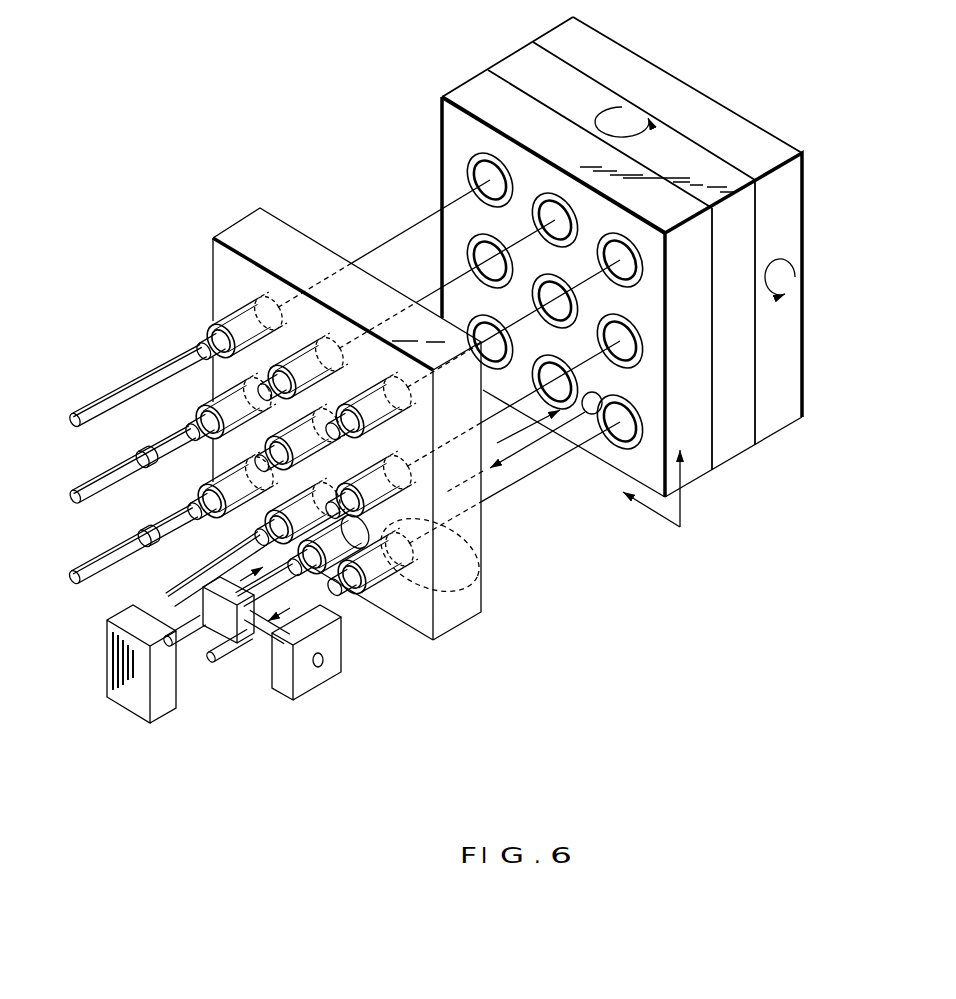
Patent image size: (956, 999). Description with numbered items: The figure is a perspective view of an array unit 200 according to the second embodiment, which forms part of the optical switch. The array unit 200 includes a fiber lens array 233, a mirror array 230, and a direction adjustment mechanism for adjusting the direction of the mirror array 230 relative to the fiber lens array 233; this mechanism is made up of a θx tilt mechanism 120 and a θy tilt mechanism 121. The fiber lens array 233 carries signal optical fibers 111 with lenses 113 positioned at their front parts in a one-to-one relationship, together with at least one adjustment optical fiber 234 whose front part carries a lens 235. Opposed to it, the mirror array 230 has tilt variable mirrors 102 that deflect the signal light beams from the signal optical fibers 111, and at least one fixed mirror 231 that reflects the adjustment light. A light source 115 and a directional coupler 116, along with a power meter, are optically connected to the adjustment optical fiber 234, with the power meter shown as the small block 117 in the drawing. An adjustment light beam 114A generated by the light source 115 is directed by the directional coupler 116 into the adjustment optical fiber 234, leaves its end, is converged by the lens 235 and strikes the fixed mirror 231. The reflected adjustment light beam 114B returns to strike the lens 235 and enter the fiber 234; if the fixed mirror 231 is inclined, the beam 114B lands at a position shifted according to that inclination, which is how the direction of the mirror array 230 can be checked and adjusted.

The array unit 200 is at (295, 110).
The tilt variable mirrors 102 is at (485, 175).
The signal optical fibers 111 is at (182, 354).
The lenses 113 is at (260, 287).
The adjustment light beam 114A is at (544, 423).
The reflected adjustment light beam 114B is at (519, 455).
The light source 115 is at (142, 700).
The directional coupler 116 is at (226, 665).
The photodetector 117 is at (283, 693).
The θx tilt mechanism 120 is at (776, 408).
The θy tilt mechanism 121 is at (517, 68).
The mirror array 230 is at (477, 90).
The fixed mirror 231 is at (602, 398).
The fiber lens array 233 is at (236, 230).
The adjustment optical fiber 234 is at (442, 633).
The lens 235 is at (482, 593).